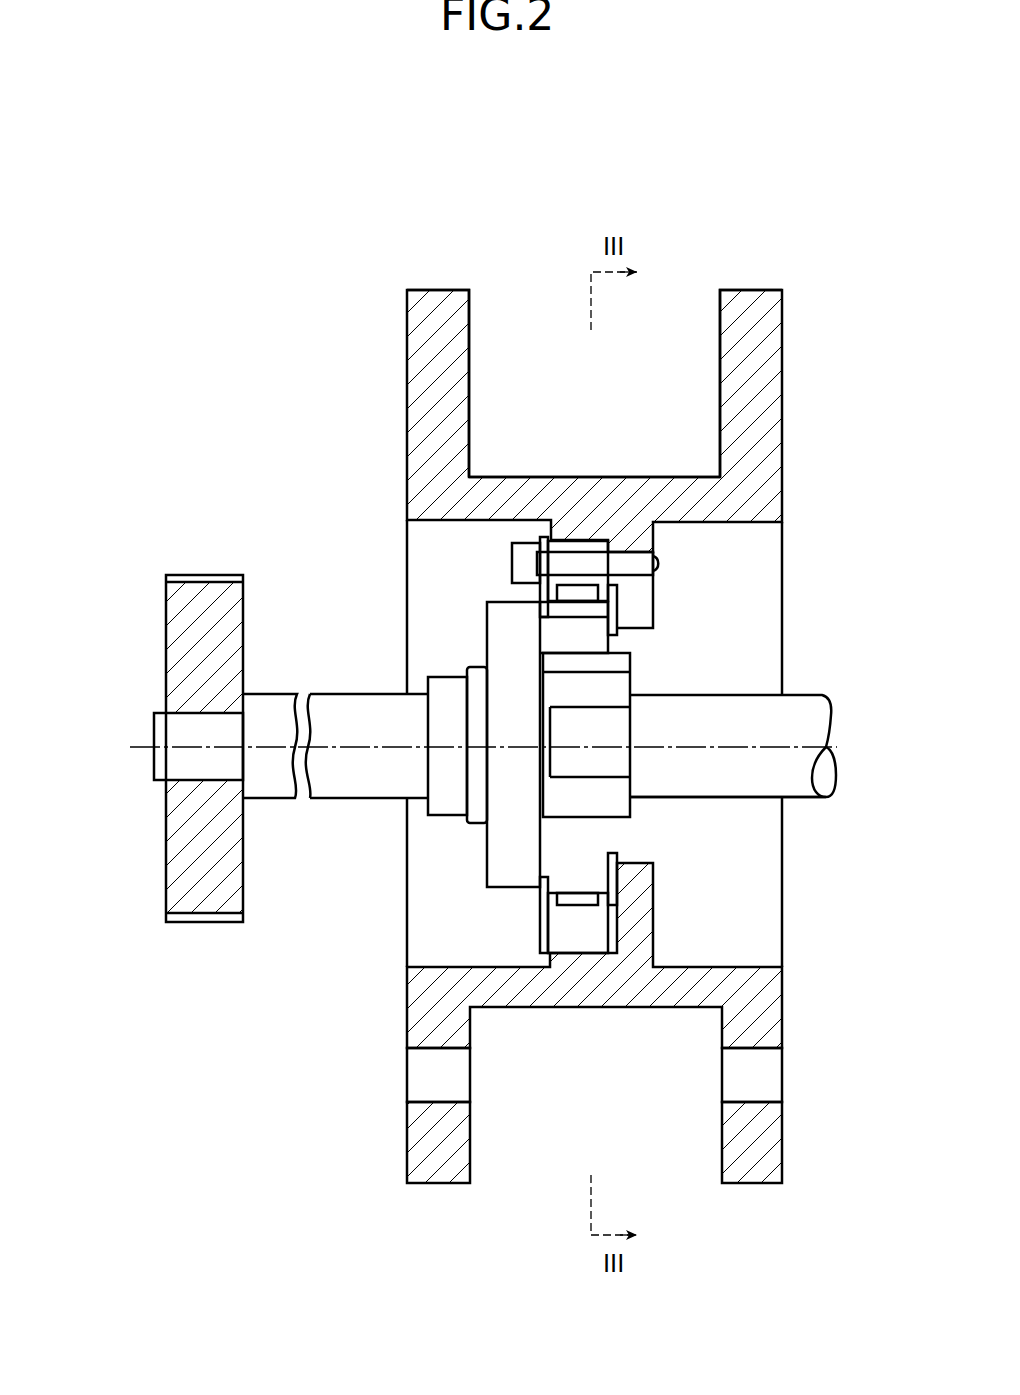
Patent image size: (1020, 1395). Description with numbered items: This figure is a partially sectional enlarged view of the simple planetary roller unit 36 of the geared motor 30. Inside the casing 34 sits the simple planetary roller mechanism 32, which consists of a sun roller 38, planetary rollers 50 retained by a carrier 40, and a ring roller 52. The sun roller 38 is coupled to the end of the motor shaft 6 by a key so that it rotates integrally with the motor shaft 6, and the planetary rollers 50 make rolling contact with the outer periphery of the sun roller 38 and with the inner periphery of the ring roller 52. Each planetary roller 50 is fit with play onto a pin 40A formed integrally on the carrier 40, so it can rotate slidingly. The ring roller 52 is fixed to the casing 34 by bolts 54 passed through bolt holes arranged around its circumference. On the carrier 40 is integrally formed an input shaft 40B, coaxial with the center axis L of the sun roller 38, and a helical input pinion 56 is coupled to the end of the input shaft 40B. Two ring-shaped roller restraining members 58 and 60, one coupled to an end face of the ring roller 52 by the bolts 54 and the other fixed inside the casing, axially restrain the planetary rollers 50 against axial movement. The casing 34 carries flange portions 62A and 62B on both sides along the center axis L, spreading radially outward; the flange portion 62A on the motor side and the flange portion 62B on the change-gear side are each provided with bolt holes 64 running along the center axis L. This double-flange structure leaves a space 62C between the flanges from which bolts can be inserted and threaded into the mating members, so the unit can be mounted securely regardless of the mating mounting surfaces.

The geared motor 30 is at (629, 652).
The simple planetary roller mechanism 32 is at (677, 840).
The casing 34 is at (629, 337).
The simple planetary roller unit 36 is at (626, 1074).
The sun roller 38 is at (625, 806).
The carrier 40 is at (413, 746).
The pin 40A is at (496, 632).
The input shaft 40B is at (360, 780).
The planetary roller 50 is at (598, 660).
The ring roller 52 is at (578, 546).
The bolt 54 is at (522, 548).
The helical input pinion 56 is at (178, 868).
The roller restraining member 58 is at (533, 597).
The roller restraining member 60 is at (617, 632).
The flange portion 62A is at (757, 292).
The flange portion 62B is at (430, 290).
The space 62C is at (672, 381).
The bolt hole 64 is at (757, 1077).
The motor shaft 6 is at (785, 720).
The center axis L is at (668, 750).